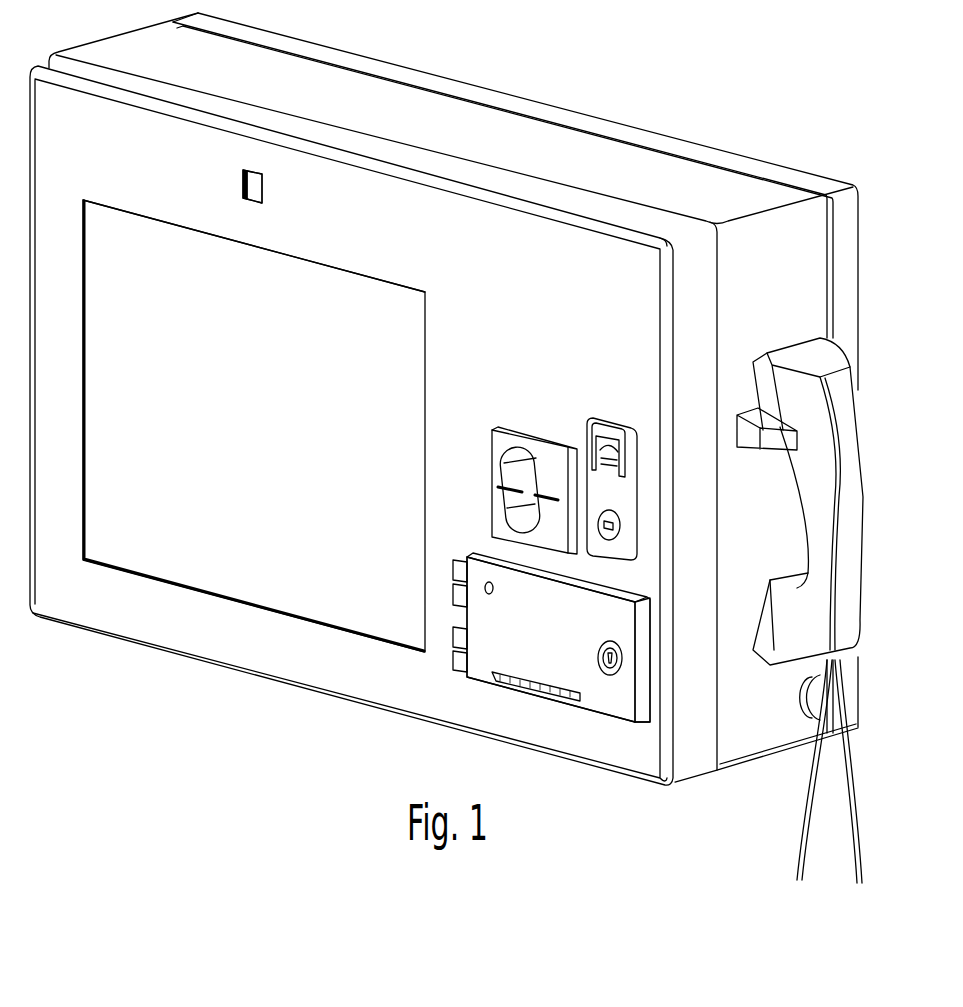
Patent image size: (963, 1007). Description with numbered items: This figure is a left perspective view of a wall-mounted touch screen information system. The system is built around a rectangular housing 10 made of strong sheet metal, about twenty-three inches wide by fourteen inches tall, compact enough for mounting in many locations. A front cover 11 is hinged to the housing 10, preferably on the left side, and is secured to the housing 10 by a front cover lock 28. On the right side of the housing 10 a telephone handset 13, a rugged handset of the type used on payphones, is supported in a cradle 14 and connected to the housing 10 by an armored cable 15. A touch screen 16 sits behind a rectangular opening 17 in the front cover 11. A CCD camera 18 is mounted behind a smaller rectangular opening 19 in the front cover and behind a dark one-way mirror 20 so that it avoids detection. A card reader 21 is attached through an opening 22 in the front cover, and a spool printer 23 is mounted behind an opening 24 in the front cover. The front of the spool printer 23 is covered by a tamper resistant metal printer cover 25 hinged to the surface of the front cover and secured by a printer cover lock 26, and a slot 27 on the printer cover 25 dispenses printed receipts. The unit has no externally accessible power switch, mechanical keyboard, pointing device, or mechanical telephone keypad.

The housing 10 is at (503, 122).
The front cover 11 is at (388, 143).
The telephone handset 13 is at (860, 511).
The cradle 14 is at (762, 452).
The armored cable 15 is at (845, 805).
The touch screen 16 is at (353, 278).
The rectangular opening 17 is at (293, 258).
The CCD camera 18 is at (264, 192).
The smaller rectangular opening 19 is at (242, 196).
The dark one-way mirror 20 is at (244, 174).
The card reader 21 is at (497, 475).
The opening 22 is at (537, 433).
The spool printer 23 is at (622, 697).
The opening 24 is at (653, 662).
The printer cover 25 is at (618, 615).
The printer cover lock 26 is at (598, 656).
The slot 27 is at (517, 680).
The front cover lock 28 is at (620, 527).